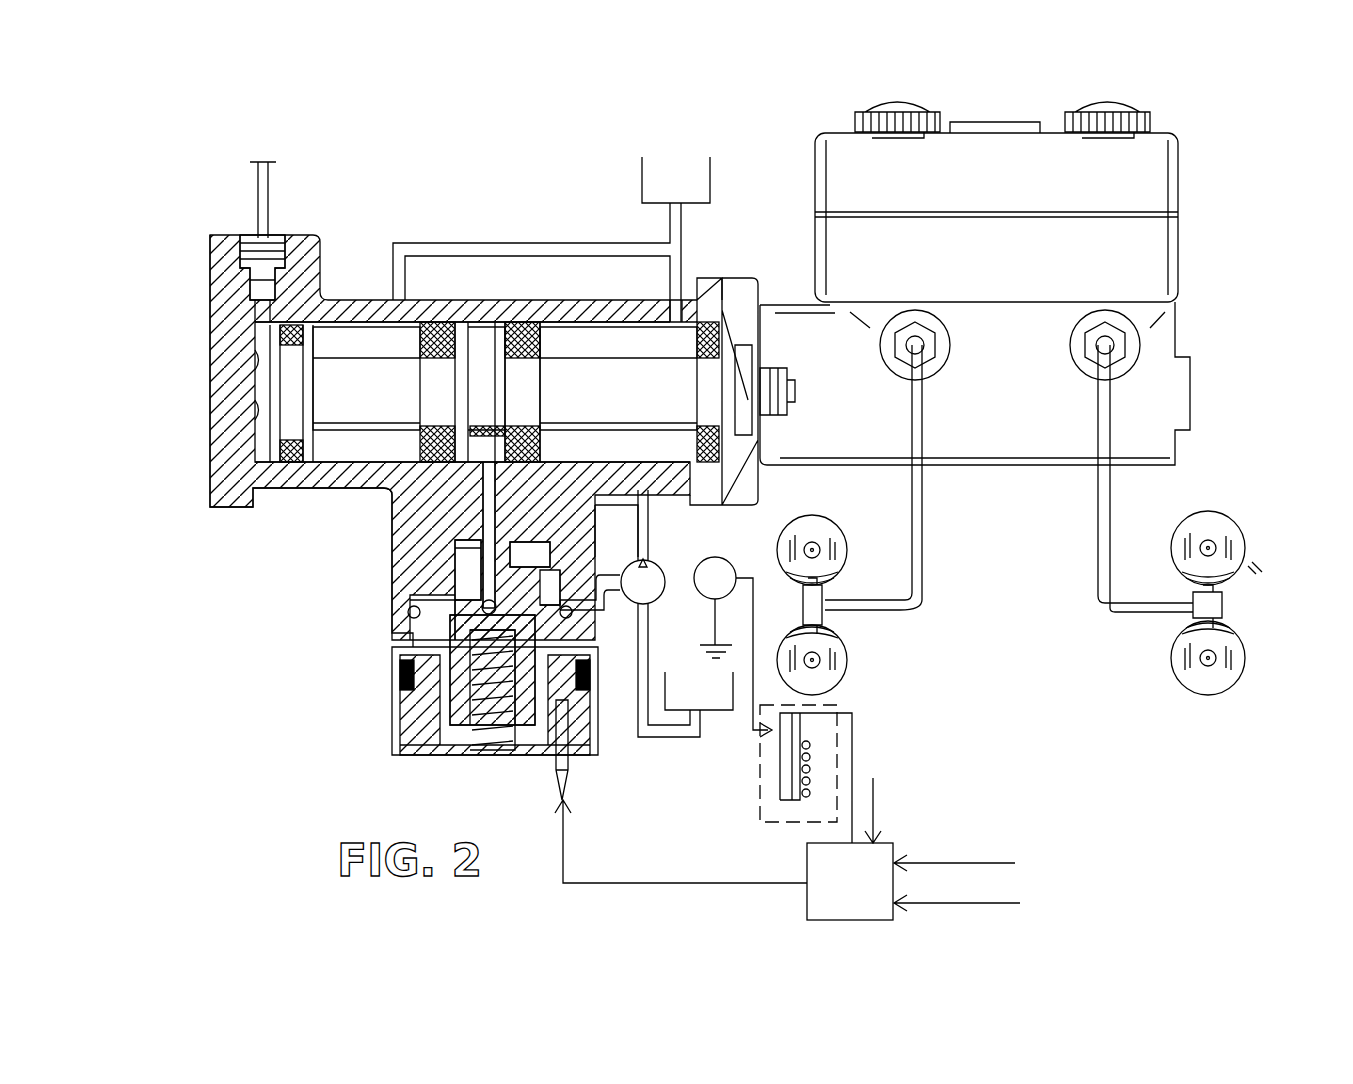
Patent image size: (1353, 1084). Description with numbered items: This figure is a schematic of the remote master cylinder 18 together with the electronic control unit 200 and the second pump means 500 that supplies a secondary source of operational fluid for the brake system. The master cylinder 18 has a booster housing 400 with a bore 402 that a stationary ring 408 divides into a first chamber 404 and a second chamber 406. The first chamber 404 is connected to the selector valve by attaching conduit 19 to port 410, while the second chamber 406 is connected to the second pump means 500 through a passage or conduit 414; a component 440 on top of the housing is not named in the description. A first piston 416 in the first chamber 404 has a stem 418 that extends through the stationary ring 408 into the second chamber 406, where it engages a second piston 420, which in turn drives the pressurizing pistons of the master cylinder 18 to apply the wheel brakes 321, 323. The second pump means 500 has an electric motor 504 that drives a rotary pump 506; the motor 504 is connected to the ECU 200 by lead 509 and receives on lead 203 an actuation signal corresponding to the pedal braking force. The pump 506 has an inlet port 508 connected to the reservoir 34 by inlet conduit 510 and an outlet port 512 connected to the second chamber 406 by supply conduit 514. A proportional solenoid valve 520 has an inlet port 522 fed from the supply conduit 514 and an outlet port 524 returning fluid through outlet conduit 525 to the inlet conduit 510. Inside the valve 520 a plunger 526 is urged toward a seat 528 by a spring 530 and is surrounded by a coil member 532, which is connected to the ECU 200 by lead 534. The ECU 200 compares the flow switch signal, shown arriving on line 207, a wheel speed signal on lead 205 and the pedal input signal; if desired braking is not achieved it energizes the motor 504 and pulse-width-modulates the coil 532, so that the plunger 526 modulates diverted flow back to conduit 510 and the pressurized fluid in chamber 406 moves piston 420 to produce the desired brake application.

The remote master cylinder 18 is at (1168, 332).
The conduit 19 is at (256, 170).
The reservoir 34 is at (645, 183).
The electronic control unit 200 is at (808, 900).
The lead 203 is at (938, 905).
The lead 205 is at (1262, 575).
The flow switch signal 207 is at (978, 863).
The wheel brake 321 is at (838, 536).
The wheel brake 323 is at (1236, 530).
The booster housing 400 is at (305, 252).
The bore 402 is at (582, 336).
The first chamber 404 is at (380, 354).
The second chamber 406 is at (666, 354).
The stationary ring 408 is at (443, 322).
The port 410 is at (272, 238).
The passage or conduit 414 is at (487, 462).
The first piston 416 is at (212, 462).
The stem 418 is at (312, 490).
The second piston 420 is at (535, 320).
The reservoir port housing 440 is at (452, 196).
The second pump means 500 is at (659, 757).
The electric motor 504 is at (712, 558).
The rotary pump 506 is at (616, 531).
The inlet port 508 is at (668, 576).
The lead 509 is at (757, 634).
The inlet conduit 510 is at (650, 508).
The outlet port 512 is at (650, 566).
The supply conduit 514 is at (628, 500).
The proportional solenoid valve 520 is at (455, 723).
The inlet port 522 is at (458, 548).
The outlet port 524 is at (435, 562).
The outlet conduit 525 is at (592, 600).
The plunger 526 is at (400, 683).
The seat 528 is at (408, 614).
The spring 530 is at (455, 752).
The coil member 532 is at (578, 765).
The lead 534 is at (565, 856).